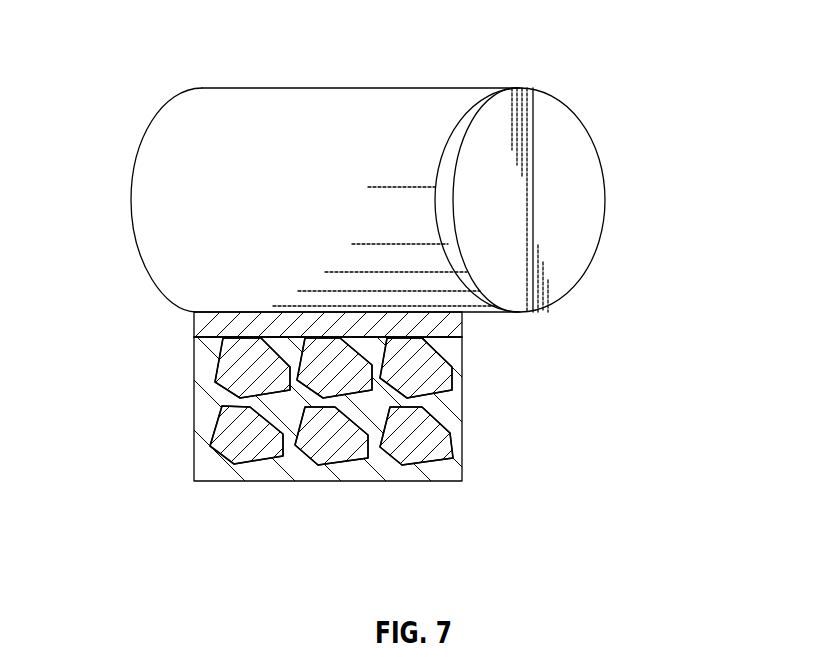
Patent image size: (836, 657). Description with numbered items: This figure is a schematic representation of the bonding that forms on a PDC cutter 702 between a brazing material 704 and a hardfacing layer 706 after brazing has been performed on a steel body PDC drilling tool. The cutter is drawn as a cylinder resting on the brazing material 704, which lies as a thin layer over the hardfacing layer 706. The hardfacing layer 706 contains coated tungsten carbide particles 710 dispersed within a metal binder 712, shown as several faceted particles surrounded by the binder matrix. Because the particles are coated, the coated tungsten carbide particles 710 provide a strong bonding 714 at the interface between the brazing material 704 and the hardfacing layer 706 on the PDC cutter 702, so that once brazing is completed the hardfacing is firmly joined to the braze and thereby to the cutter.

The PDC cutter 702 is at (563, 135).
The brazing material 704 is at (191, 323).
The hardfacing layer 706 is at (397, 431).
The coated tungsten carbide particles 710 is at (427, 368).
The metal binder 712 is at (448, 470).
The strong bonding 714 is at (433, 341).